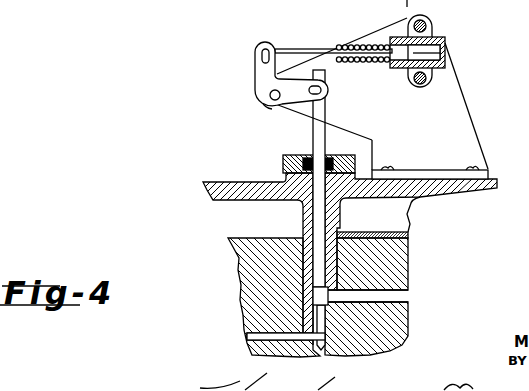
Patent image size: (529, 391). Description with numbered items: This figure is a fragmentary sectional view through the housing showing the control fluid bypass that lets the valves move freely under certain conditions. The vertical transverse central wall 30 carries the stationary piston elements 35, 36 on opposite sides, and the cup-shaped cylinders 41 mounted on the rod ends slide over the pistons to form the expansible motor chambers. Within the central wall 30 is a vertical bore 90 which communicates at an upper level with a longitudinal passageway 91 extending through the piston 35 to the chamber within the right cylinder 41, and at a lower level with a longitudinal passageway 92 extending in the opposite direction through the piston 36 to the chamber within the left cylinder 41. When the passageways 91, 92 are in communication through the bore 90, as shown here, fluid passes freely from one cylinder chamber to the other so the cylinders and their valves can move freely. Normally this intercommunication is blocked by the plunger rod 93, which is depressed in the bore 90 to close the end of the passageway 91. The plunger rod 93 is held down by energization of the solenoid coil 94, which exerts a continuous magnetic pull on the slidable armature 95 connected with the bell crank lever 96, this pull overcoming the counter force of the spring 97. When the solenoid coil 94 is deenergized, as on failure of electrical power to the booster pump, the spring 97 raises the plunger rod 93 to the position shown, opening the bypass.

The vertical transverse central wall 30 is at (326, 350).
The stationary piston element 35 is at (404, 322).
The stationary piston element 36 is at (240, 262).
The cup-shaped cylinder 41 is at (388, 232).
The vertical bore 90 is at (318, 297).
The longitudinal passageway 91 is at (388, 297).
The longitudinal passageway 92 is at (265, 337).
The plunger rod 93 is at (313, 221).
The solenoid coil 94 is at (446, 37).
The slidable armature 95 is at (446, 52).
The bell crank lever 96 is at (259, 73).
The spring 97 is at (372, 44).